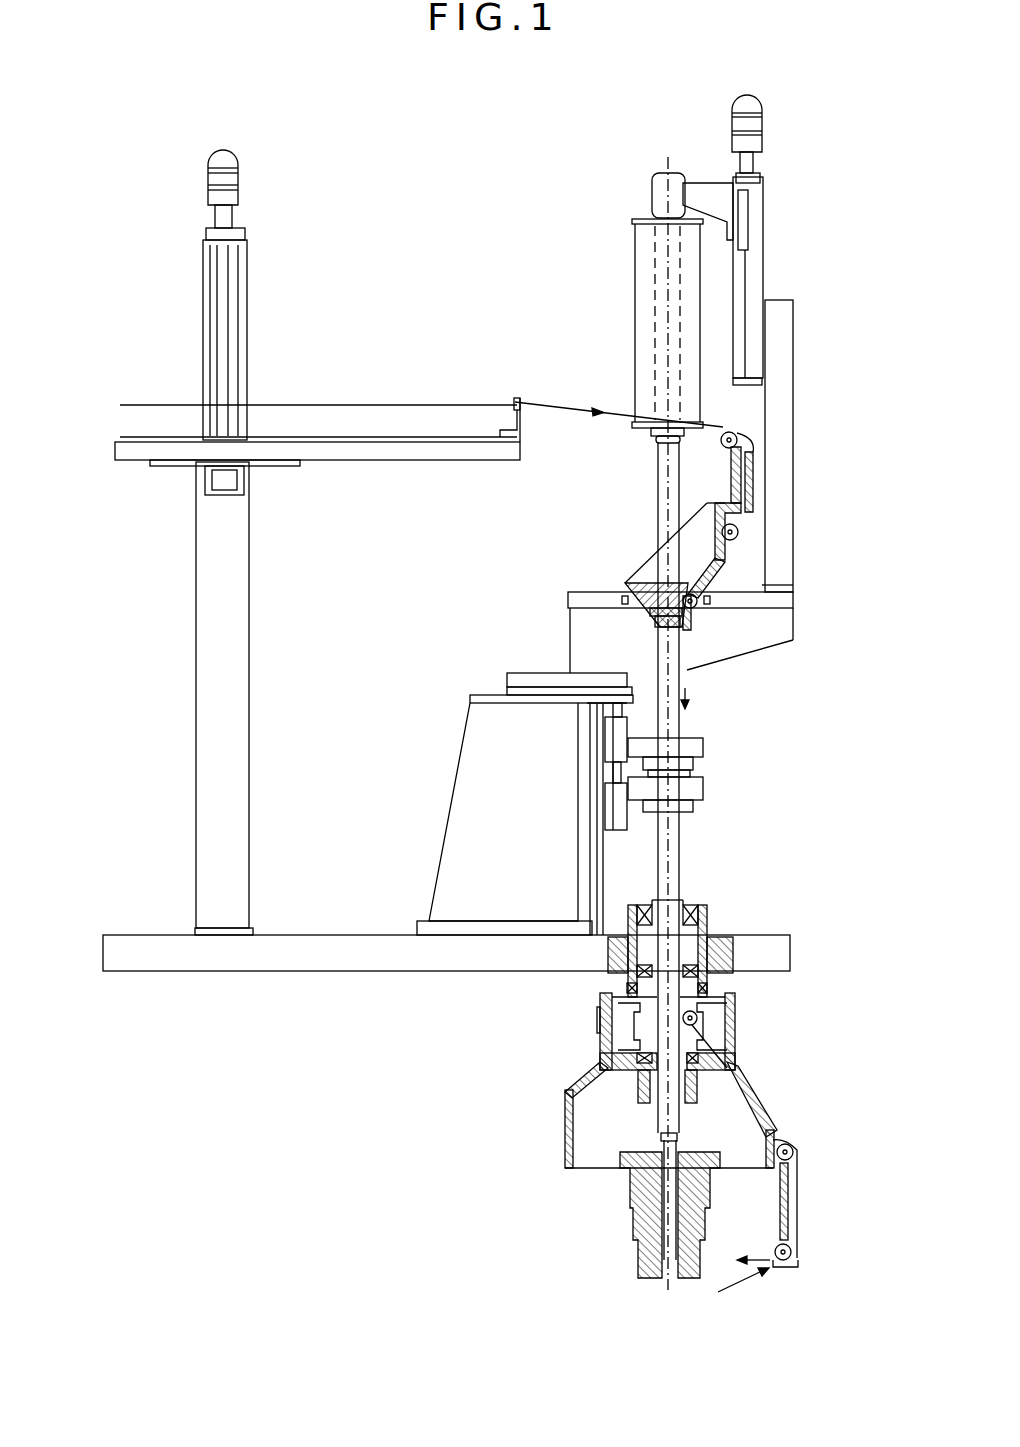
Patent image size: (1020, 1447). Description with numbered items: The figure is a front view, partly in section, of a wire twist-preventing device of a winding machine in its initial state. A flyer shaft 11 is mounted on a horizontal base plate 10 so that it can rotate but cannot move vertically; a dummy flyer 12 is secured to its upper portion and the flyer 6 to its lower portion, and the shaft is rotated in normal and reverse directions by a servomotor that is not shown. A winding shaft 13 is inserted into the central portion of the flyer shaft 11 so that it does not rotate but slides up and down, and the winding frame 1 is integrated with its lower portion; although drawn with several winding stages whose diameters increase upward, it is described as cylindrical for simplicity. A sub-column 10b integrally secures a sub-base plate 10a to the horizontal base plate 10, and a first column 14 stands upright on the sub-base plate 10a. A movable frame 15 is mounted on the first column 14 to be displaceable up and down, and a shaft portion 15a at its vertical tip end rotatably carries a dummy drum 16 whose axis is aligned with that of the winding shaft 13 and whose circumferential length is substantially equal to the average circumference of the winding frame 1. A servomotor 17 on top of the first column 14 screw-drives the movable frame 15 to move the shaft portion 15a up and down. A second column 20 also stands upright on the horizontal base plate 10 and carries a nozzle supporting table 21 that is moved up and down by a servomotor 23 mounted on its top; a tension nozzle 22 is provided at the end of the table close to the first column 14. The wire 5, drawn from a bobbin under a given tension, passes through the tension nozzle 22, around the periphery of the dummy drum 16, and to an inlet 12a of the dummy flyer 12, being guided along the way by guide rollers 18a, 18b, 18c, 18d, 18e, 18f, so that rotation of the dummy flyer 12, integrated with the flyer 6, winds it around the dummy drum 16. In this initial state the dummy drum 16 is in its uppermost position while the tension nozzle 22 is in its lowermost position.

The winding frame 1 is at (636, 1185).
The wire 5 is at (331, 402).
The flyer 6 is at (735, 1286).
The horizontal base plate 10 is at (318, 962).
The sub-base plate 10a is at (572, 598).
The sub-column 10b is at (785, 436).
The flyer shaft 11 is at (680, 846).
The dummy flyer 12 is at (720, 481).
The inlet 12a is at (727, 426).
The winding shaft 13 is at (662, 1138).
The first column 14 is at (757, 254).
The movable frame 15 is at (707, 190).
The shaft portion 15a is at (655, 245).
The dummy drum 16 is at (643, 275).
The servomotor 17 is at (735, 105).
The guide roller 18a is at (735, 437).
The guide roller 18b is at (740, 530).
The guide roller 18c is at (695, 610).
The guide roller 18d is at (700, 1018).
The guide roller 18e is at (791, 1144).
The guide roller 18f is at (798, 1255).
The second column 20 is at (244, 684).
The nozzle supporting table 21 is at (359, 455).
The tension nozzle 22 is at (512, 395).
The servomotor 23 is at (233, 160).